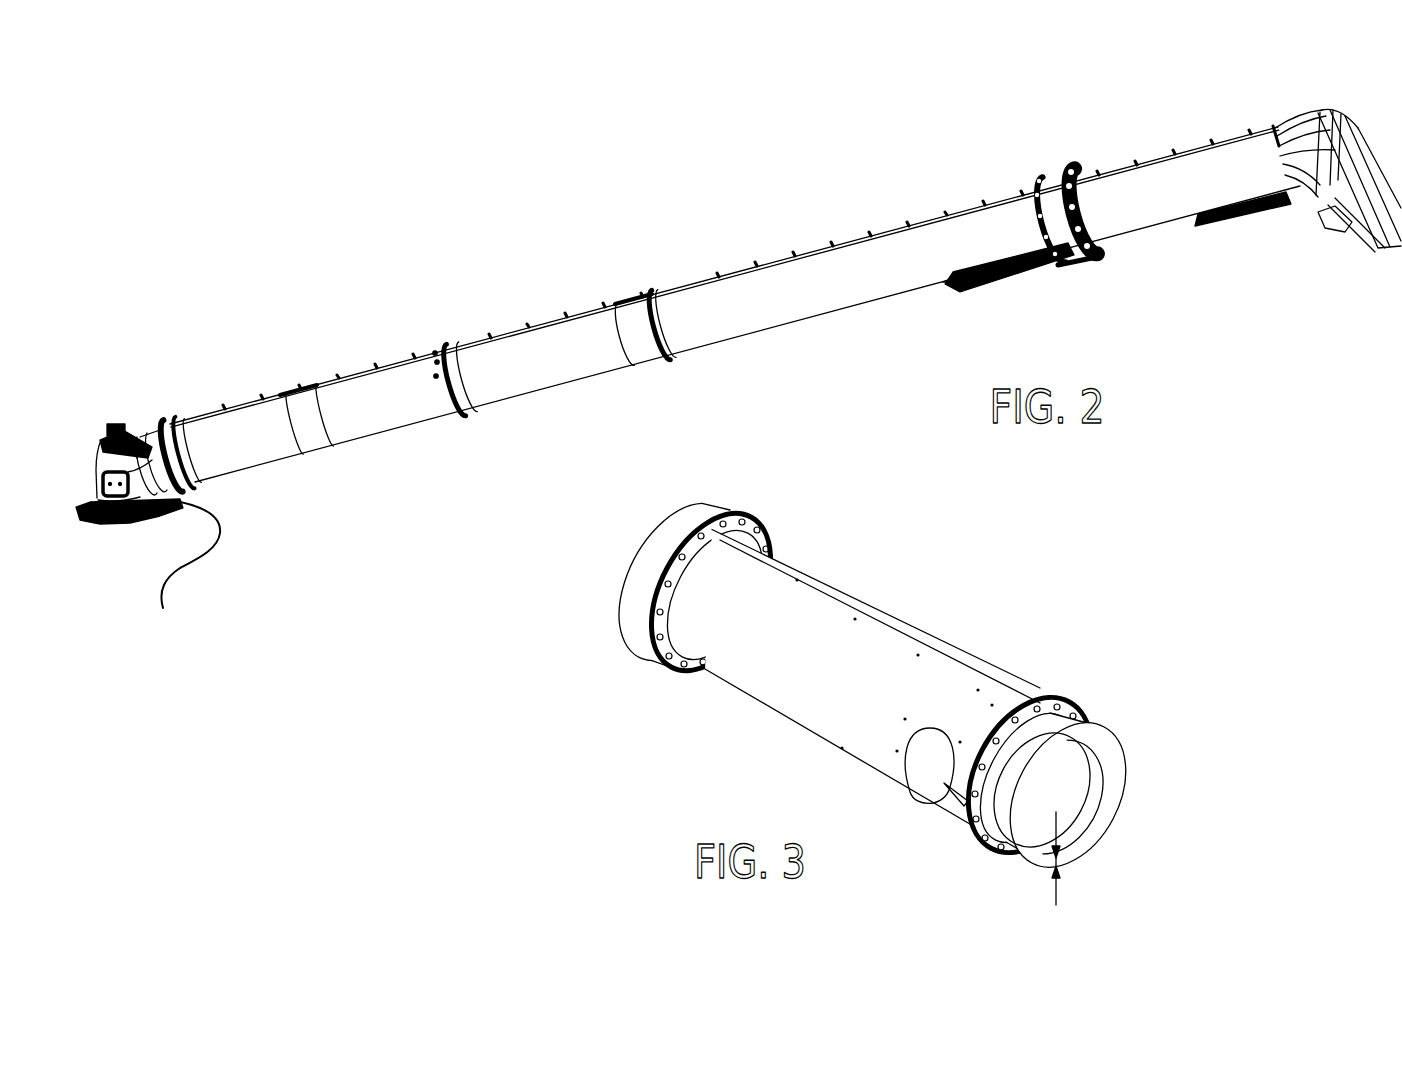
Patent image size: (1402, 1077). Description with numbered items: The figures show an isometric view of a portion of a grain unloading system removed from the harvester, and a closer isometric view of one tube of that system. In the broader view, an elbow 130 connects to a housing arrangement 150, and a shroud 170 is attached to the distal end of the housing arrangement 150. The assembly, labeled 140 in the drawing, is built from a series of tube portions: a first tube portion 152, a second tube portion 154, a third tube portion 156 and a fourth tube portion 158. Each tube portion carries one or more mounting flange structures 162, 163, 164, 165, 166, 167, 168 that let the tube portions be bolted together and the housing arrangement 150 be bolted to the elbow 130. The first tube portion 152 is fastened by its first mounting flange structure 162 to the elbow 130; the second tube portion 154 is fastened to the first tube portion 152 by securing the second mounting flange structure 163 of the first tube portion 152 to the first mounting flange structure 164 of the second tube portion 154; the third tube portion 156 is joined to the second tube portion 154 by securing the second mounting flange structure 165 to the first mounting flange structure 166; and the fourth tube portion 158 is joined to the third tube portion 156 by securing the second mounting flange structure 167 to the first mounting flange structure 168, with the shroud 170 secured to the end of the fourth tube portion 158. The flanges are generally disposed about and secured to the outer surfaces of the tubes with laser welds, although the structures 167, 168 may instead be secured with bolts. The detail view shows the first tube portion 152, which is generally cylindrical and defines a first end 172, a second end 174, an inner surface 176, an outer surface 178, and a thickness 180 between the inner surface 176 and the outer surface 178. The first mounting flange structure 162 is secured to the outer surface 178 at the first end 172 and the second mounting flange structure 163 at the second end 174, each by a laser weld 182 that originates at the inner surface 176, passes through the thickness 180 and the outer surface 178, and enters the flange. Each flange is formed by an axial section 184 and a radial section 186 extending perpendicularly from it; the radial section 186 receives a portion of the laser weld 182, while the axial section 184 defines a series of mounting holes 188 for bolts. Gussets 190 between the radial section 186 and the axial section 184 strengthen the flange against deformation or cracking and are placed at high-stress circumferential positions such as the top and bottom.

In FIG. 2, the elbow 130 is at (103, 478).
In FIG. 2, the conduit assembly 140 is at (370, 358).
In FIG. 2, the housing arrangement 150 is at (696, 268).
In FIG. 2, the first tube portion 152 is at (256, 455).
In FIG. 3, the first tube portion 152 is at (840, 568).
In FIG. 2, the second tube portion 154 is at (520, 392).
In FIG. 2, the third tube portion 156 is at (806, 312).
In FIG. 2, the fourth tube portion 158 is at (1155, 212).
In FIG. 2, the first mounting flange structure 162 is at (174, 448).
In FIG. 3, the first mounting flange structure 162 is at (1000, 860).
In FIG. 2, the second mounting flange structure 163 is at (462, 404).
In FIG. 3, the second mounting flange structure 163 is at (668, 665).
In FIG. 2, the first mounting flange structure 164 is at (460, 358).
In FIG. 2, the second mounting flange structure 165 is at (660, 343).
In FIG. 2, the first mounting flange structure 166 is at (677, 345).
In FIG. 2, the second mounting flange structure 167 is at (1042, 196).
In FIG. 2, the first mounting flange structure 168 is at (1088, 224).
In FIG. 2, the shroud 170 is at (1355, 128).
In FIG. 3, the first end 172 is at (1117, 750).
In FIG. 3, the second end 174 is at (641, 548).
In FIG. 3, the inner surface 176 is at (1090, 840).
In FIG. 3, the outer surface 178 is at (940, 652).
In FIG. 3, the thickness 180 is at (1056, 893).
In FIG. 3, the laser weld 182 is at (1100, 775).
In FIG. 3, the axial section 184 is at (963, 788).
In FIG. 3, the radial section 186 is at (1043, 697).
In FIG. 3, the mounting holes 188 is at (1055, 708).
In FIG. 3, the gussets 190 is at (992, 720).